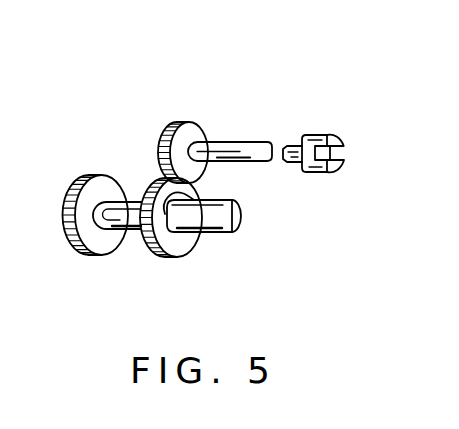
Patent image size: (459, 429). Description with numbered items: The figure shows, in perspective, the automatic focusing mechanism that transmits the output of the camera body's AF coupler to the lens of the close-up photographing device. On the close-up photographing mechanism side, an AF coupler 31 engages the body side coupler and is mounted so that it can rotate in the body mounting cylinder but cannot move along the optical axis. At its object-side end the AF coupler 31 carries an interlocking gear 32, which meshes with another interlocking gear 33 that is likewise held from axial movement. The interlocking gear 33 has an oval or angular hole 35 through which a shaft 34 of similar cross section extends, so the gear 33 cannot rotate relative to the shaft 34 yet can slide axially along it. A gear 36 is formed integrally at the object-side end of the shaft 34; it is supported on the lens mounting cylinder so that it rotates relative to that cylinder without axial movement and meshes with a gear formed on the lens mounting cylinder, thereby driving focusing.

The AF coupler 31 is at (250, 147).
The interlocking gear 32 is at (174, 122).
The interlocking gear 33 is at (183, 244).
The shaft 34 is at (239, 219).
The oval or angular hole 35 is at (205, 202).
The gear 36 is at (67, 238).